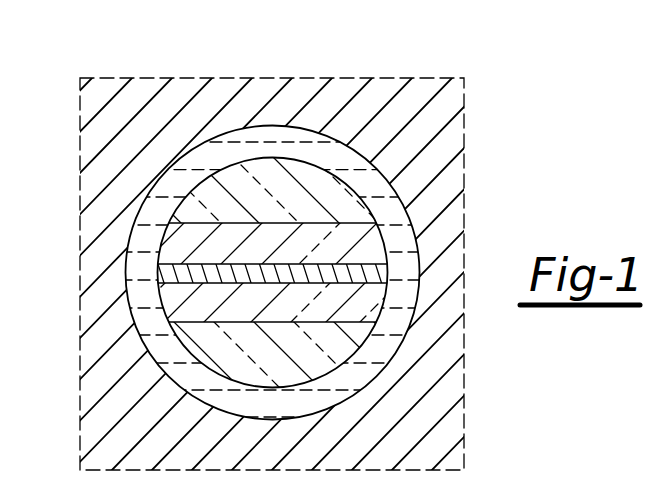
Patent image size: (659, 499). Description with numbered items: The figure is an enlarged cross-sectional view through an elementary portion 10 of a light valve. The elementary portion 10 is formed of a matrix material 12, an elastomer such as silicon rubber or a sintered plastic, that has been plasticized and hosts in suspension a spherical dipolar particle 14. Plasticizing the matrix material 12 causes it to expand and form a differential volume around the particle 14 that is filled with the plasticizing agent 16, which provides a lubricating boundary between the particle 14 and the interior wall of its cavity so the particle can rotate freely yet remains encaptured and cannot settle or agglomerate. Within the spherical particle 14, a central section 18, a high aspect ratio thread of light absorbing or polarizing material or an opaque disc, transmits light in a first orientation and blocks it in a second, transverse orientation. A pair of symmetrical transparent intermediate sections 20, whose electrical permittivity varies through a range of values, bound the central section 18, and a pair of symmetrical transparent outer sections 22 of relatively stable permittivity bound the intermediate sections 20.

The elementary portion 10 is at (378, 32).
The matrix material 12 is at (464, 172).
The spherical dipolar particle 14 is at (392, 233).
The plasticizing agent 16 is at (405, 290).
The central section 18 is at (155, 272).
The intermediate sections 20 is at (165, 238).
The outer sections 22 is at (178, 201).